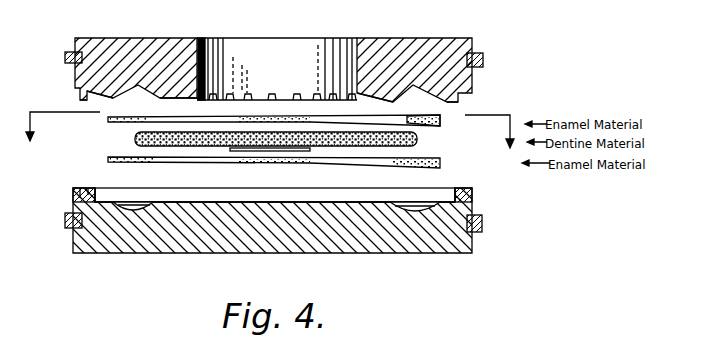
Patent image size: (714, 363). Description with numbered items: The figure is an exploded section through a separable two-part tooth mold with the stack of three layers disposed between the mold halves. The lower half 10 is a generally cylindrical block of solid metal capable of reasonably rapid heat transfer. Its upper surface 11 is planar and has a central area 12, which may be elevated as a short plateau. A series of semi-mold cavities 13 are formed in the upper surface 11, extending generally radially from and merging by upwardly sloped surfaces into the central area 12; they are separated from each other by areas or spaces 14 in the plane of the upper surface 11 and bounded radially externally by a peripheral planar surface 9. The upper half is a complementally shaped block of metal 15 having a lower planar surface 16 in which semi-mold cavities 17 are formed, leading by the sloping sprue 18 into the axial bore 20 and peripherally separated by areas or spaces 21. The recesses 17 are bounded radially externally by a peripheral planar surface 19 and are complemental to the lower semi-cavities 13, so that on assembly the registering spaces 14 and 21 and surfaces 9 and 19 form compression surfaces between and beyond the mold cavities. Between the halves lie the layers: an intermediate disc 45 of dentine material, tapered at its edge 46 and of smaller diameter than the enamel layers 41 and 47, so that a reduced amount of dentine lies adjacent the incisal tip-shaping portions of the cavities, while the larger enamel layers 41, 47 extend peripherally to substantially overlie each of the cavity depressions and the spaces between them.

The peripheral planar surface 9 is at (98, 198).
The lower half 10 is at (463, 242).
The upper surface 11 is at (373, 203).
The central area 12 is at (273, 200).
The semi-mold cavities 13 is at (131, 207).
The areas or spaces 14 is at (121, 202).
The block of metal 15 is at (462, 83).
The lower planar surface 16 is at (199, 102).
The semi-mold cavities 17 is at (130, 103).
The sloping sprue 18 is at (182, 100).
The peripheral planar surface 19 is at (100, 99).
The axial bore 20 is at (255, 52).
The areas or spaces 21 is at (150, 101).
The layer 41 is at (133, 159).
The intermediate disc 45 is at (132, 131).
The tapered edge 46 is at (138, 134).
The layer 47 is at (432, 124).